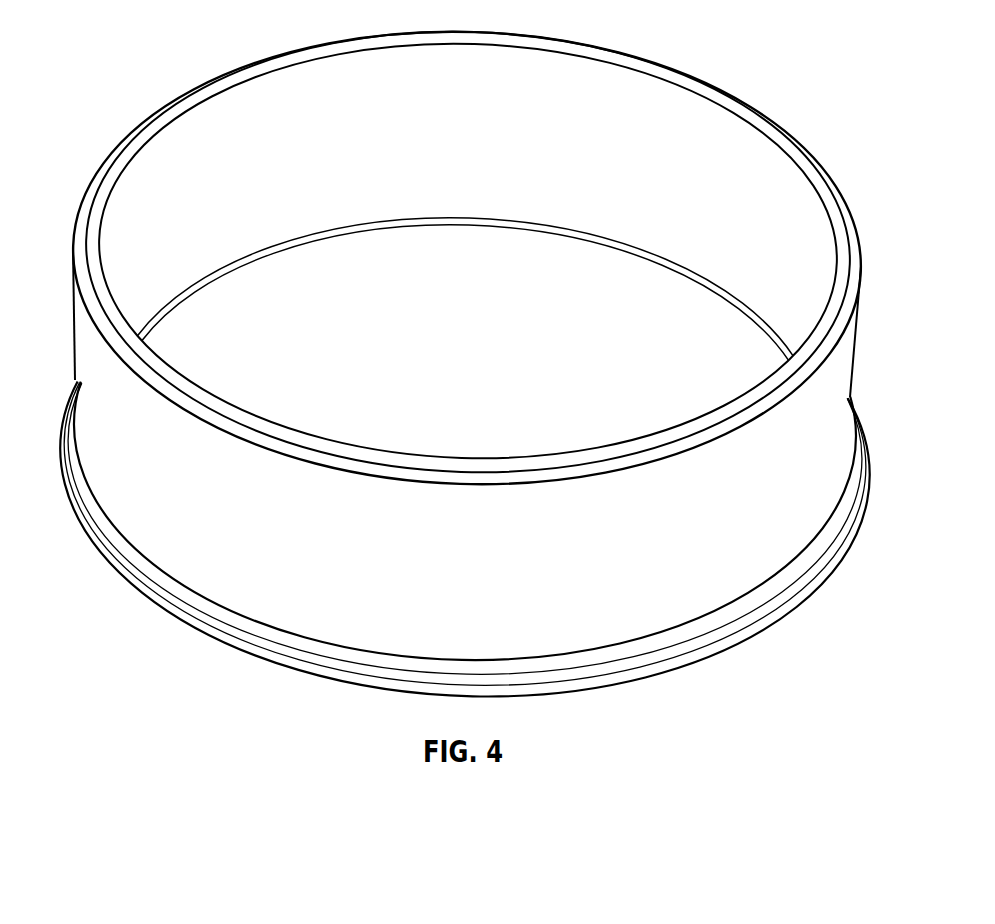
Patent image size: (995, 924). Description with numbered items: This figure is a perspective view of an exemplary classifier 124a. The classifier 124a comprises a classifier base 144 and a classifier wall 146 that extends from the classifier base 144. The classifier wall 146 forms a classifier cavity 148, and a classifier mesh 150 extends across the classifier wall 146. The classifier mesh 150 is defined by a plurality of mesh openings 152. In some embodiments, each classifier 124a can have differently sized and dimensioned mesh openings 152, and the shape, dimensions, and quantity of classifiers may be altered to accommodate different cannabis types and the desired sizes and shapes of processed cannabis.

The classifier 124a is at (132, 49).
The classifier base 144 is at (773, 598).
The classifier wall 146 is at (185, 543).
The classifier cavity 148 is at (617, 224).
The classifier mesh 150 is at (488, 372).
The mesh openings 152 is at (360, 275).